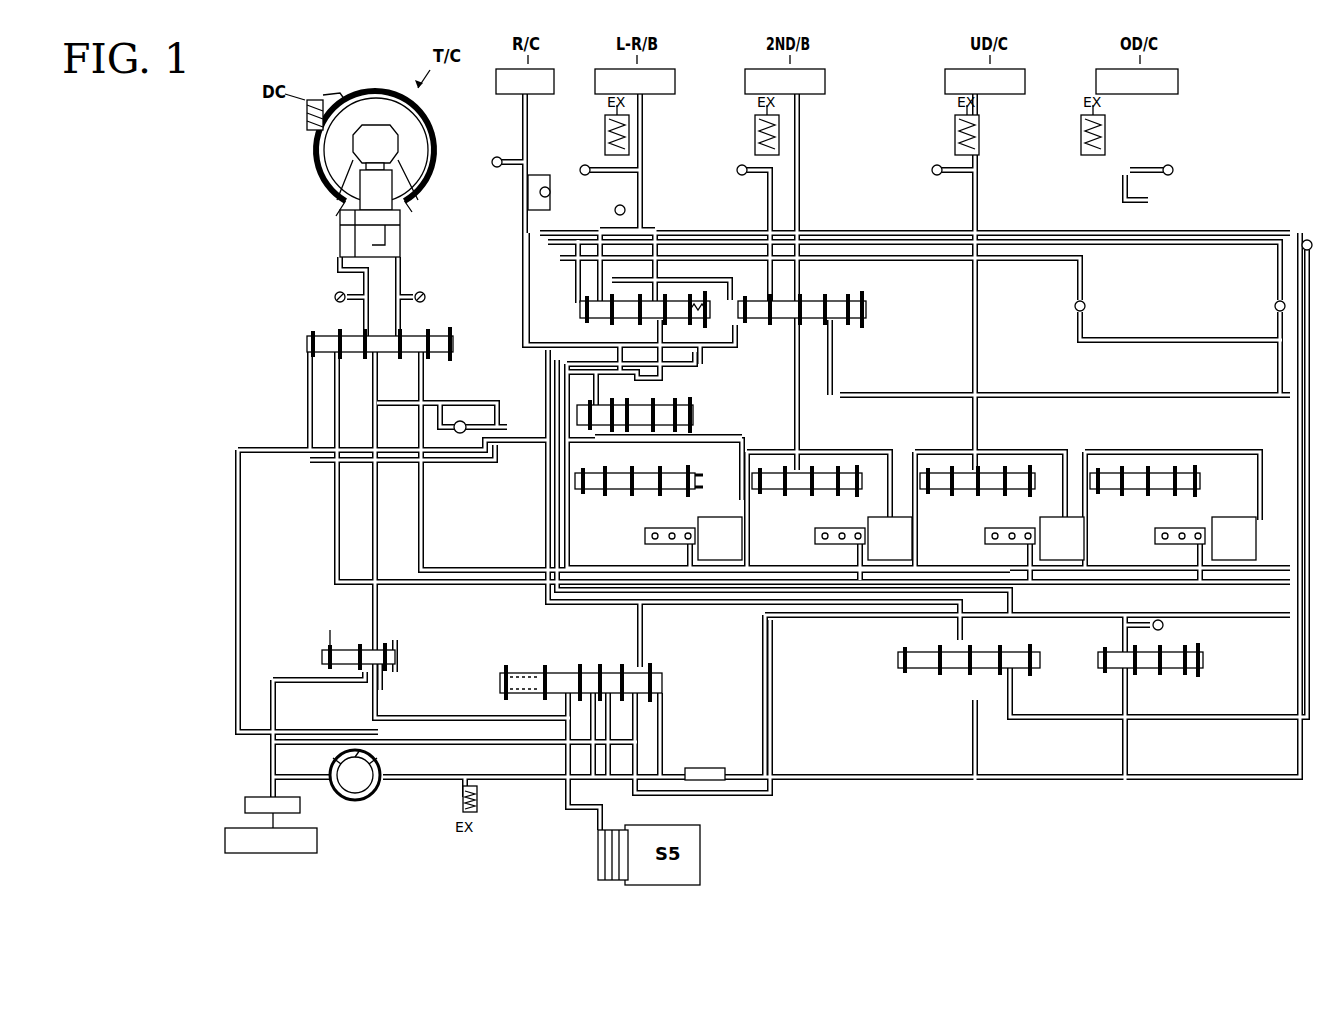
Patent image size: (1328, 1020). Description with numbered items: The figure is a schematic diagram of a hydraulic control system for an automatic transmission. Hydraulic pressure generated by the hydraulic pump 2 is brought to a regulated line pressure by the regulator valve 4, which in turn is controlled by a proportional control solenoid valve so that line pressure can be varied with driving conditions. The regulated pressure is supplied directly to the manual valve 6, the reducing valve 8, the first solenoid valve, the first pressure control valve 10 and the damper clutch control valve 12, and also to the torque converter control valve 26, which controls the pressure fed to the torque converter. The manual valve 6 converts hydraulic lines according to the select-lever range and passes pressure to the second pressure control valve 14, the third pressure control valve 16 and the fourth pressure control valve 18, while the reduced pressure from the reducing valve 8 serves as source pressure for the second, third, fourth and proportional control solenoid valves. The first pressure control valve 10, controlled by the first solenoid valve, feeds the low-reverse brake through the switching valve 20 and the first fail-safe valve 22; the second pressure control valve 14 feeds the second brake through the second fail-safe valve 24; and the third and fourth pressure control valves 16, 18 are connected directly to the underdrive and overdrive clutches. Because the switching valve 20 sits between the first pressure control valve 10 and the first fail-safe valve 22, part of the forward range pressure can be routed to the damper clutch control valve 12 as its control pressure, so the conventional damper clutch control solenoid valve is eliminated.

The hydraulic pump 2 is at (357, 800).
The regulator valve 4 is at (490, 685).
The manual valve 6 is at (878, 663).
The reducing valve 8 is at (1213, 664).
The first pressure control valve 10 is at (598, 508).
The damper clutch control valve 12 is at (300, 341).
The second pressure control valve 14 is at (845, 455).
The third pressure control valve 16 is at (944, 509).
The fourth pressure control valve 18 is at (1117, 509).
The switching valve 20 is at (700, 414).
The first fail-safe valve 22 is at (578, 308).
The second fail-safe valve 24 is at (869, 312).
The torque converter control valve 26 is at (312, 659).